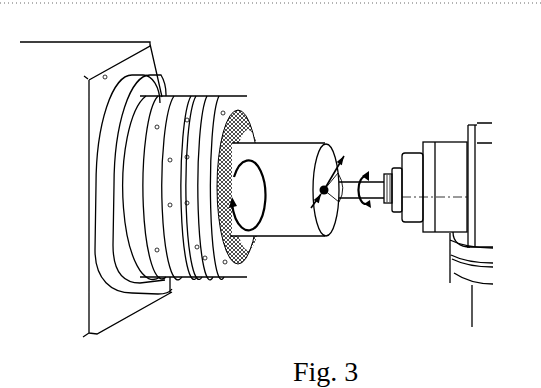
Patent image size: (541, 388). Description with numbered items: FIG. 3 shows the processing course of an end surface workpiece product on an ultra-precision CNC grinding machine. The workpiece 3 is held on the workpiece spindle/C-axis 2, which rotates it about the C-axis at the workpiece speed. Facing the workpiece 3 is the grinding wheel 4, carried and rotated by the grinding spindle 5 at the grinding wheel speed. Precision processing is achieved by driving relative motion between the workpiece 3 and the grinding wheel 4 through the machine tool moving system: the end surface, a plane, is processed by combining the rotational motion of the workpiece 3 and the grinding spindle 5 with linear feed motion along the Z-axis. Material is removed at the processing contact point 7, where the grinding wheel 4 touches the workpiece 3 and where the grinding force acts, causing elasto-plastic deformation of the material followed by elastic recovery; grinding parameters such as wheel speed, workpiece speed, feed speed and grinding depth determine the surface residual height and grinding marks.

The workpiece spindle/C-axis 2 is at (225, 94).
The workpiece 3 is at (310, 143).
The grinding wheel 4 is at (352, 181).
The grinding spindle 5 is at (420, 150).
The processing contact point 7 is at (324, 199).